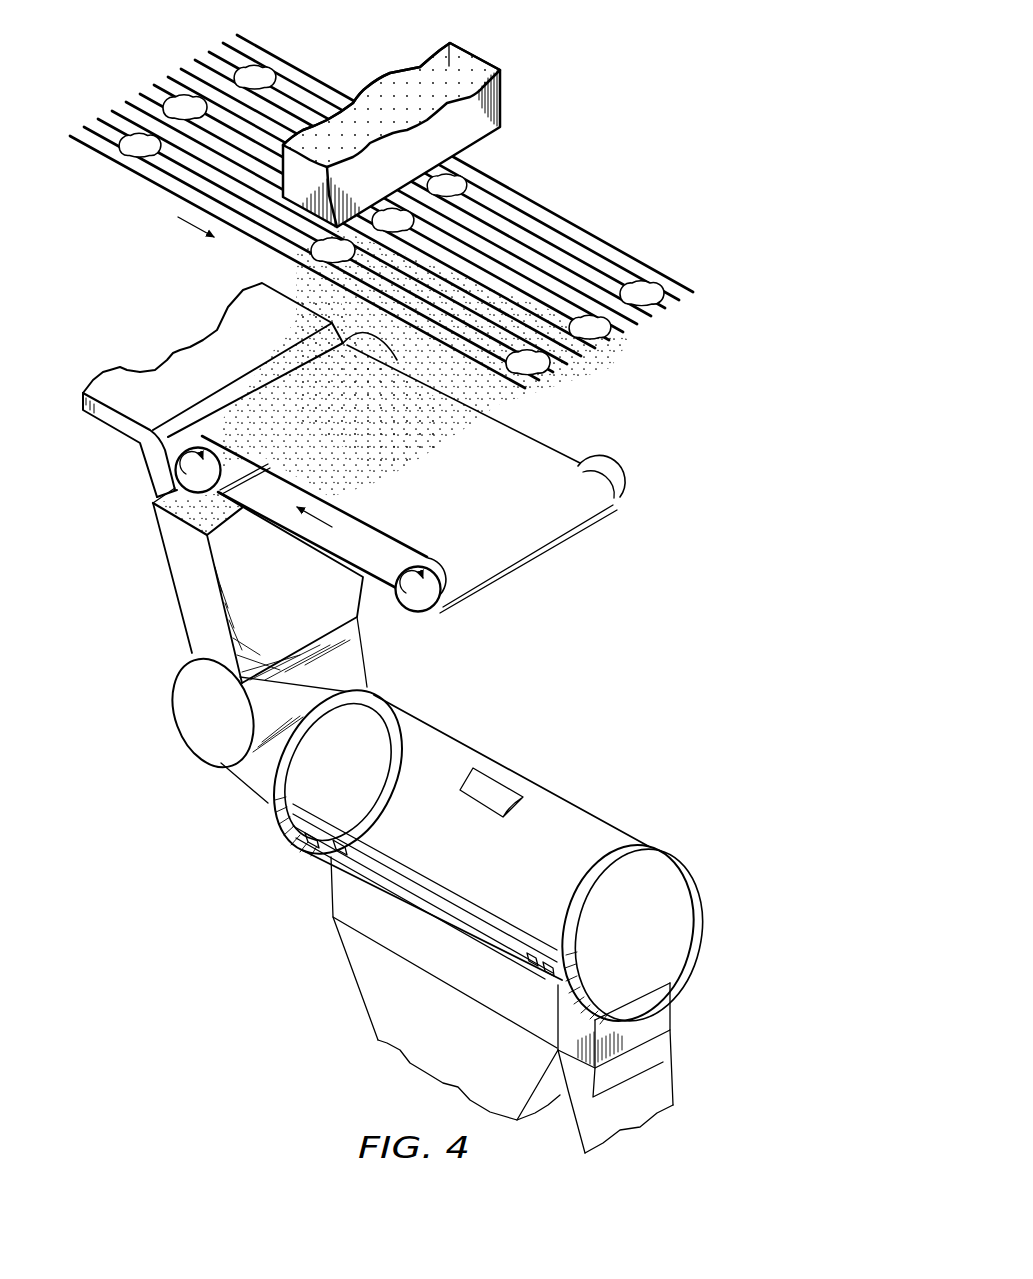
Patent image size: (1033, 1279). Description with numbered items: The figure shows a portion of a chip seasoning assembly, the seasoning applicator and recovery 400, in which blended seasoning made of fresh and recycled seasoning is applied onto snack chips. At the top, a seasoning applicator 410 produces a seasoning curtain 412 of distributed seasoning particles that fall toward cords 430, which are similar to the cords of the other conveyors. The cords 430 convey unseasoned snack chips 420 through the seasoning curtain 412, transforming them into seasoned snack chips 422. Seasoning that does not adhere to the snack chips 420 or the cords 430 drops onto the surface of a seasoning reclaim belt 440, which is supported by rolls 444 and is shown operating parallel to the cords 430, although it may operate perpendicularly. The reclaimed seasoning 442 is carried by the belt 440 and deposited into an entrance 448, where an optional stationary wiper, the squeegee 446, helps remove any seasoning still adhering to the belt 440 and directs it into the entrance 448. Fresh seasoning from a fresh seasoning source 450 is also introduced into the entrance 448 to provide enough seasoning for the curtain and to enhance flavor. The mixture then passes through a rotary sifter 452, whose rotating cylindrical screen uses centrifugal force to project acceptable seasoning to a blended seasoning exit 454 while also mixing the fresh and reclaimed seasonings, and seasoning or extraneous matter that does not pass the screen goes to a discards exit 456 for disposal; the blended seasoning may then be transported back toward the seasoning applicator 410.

The seasoning applicator and recovery 400 is at (668, 143).
The seasoning applicator 410 is at (500, 95).
The seasoning curtain 412 is at (478, 155).
The unseasoned snack chips 420 is at (192, 100).
The seasoned snack chips 422 is at (648, 287).
The cords 430 is at (570, 224).
The seasoning reclaim belt 440 is at (557, 535).
The reclaimed seasoning 442 is at (235, 420).
The rolls 444 is at (187, 472).
The squeegee 446 is at (225, 505).
The entrance 448 is at (172, 576).
The fresh seasoning source 450 is at (131, 368).
The rotary sifter 452 is at (583, 835).
The blended seasoning exit 454 is at (360, 990).
The discards exit 456 is at (667, 1091).